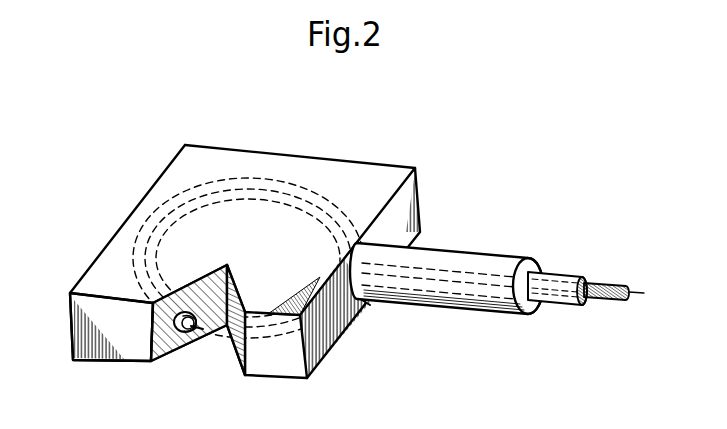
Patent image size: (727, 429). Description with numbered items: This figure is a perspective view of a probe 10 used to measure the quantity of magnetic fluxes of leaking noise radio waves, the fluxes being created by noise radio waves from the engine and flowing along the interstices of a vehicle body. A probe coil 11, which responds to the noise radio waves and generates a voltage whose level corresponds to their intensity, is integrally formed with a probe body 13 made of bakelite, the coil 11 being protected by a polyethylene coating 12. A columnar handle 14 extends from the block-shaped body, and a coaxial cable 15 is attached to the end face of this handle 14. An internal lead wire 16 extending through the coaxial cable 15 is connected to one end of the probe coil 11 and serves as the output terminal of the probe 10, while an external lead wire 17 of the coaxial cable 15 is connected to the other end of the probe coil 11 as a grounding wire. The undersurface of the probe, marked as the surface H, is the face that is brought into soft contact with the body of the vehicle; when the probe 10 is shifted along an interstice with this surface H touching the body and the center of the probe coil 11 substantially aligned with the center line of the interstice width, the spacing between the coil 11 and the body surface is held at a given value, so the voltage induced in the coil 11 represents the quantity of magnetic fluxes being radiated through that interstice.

The probe 10 is at (259, 160).
The probe coil 11 is at (193, 329).
The polyethylene coating 12 is at (175, 332).
The probe body 13 is at (122, 353).
The columnar handle 14 is at (468, 261).
The coaxial cable 15 is at (556, 273).
The internal lead wire 16 is at (635, 294).
The external lead wire 17 is at (590, 301).
The surface H is at (363, 307).